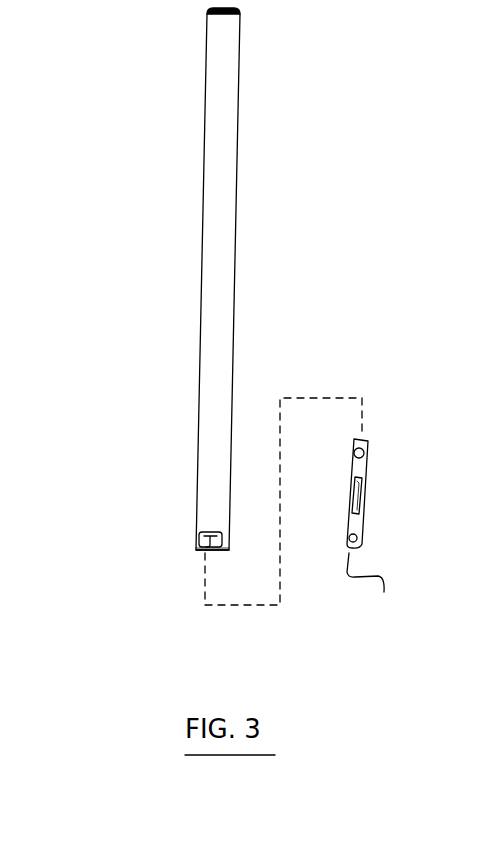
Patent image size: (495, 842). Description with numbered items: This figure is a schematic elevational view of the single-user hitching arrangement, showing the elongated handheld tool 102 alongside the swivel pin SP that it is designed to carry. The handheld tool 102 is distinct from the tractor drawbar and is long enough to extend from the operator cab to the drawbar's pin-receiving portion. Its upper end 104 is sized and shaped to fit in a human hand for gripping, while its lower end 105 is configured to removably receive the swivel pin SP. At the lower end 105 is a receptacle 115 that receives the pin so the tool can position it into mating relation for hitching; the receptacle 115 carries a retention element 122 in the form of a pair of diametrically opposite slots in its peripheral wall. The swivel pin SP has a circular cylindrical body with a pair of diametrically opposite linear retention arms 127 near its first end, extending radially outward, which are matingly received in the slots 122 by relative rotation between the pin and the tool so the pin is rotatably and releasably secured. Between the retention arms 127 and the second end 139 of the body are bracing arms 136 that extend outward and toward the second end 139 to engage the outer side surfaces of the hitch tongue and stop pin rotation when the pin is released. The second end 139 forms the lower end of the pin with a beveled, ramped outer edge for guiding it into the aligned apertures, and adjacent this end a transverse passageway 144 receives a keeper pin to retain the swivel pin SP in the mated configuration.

The handheld tool 102 is at (235, 225).
The upper end 104 is at (201, 33).
The lower end 105 is at (195, 511).
The receptacle 115 is at (198, 557).
The retention element 122 is at (219, 514).
The swivel pin SP is at (375, 452).
The retention arms 127 is at (365, 461).
The bracing arm 136 is at (363, 488).
The transverse passageway 144 is at (357, 535).
The second end 139 is at (384, 584).